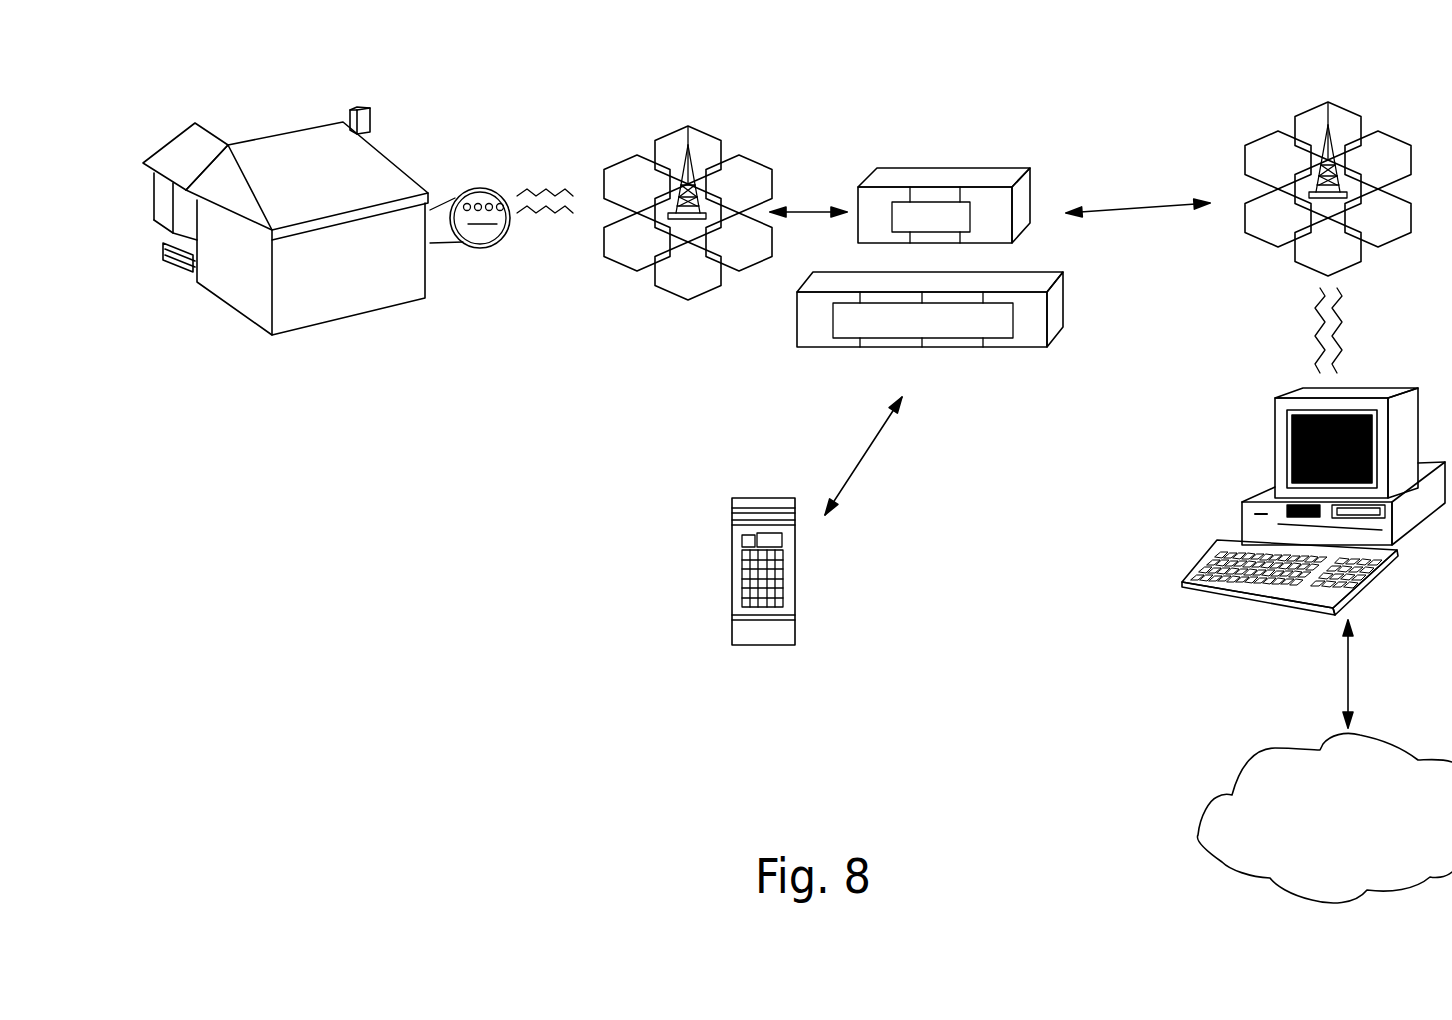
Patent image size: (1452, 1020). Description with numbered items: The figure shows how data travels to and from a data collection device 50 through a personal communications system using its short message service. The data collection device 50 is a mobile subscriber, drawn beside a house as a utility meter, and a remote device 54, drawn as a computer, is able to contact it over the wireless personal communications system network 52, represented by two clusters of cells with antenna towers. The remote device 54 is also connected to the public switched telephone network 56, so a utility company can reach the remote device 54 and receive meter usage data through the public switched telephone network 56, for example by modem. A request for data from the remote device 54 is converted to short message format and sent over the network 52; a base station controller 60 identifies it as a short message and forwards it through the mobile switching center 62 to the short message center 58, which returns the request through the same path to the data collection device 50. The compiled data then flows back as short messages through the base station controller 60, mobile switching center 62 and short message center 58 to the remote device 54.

The data collection device 50 is at (487, 192).
The personal communications system network 52 is at (717, 138).
The remote device 54 is at (1238, 510).
The public switched telephone network 56 is at (1217, 797).
The short message center 58 is at (730, 542).
The base station controller 60 is at (950, 168).
The mobile switching center 62 is at (1003, 348).